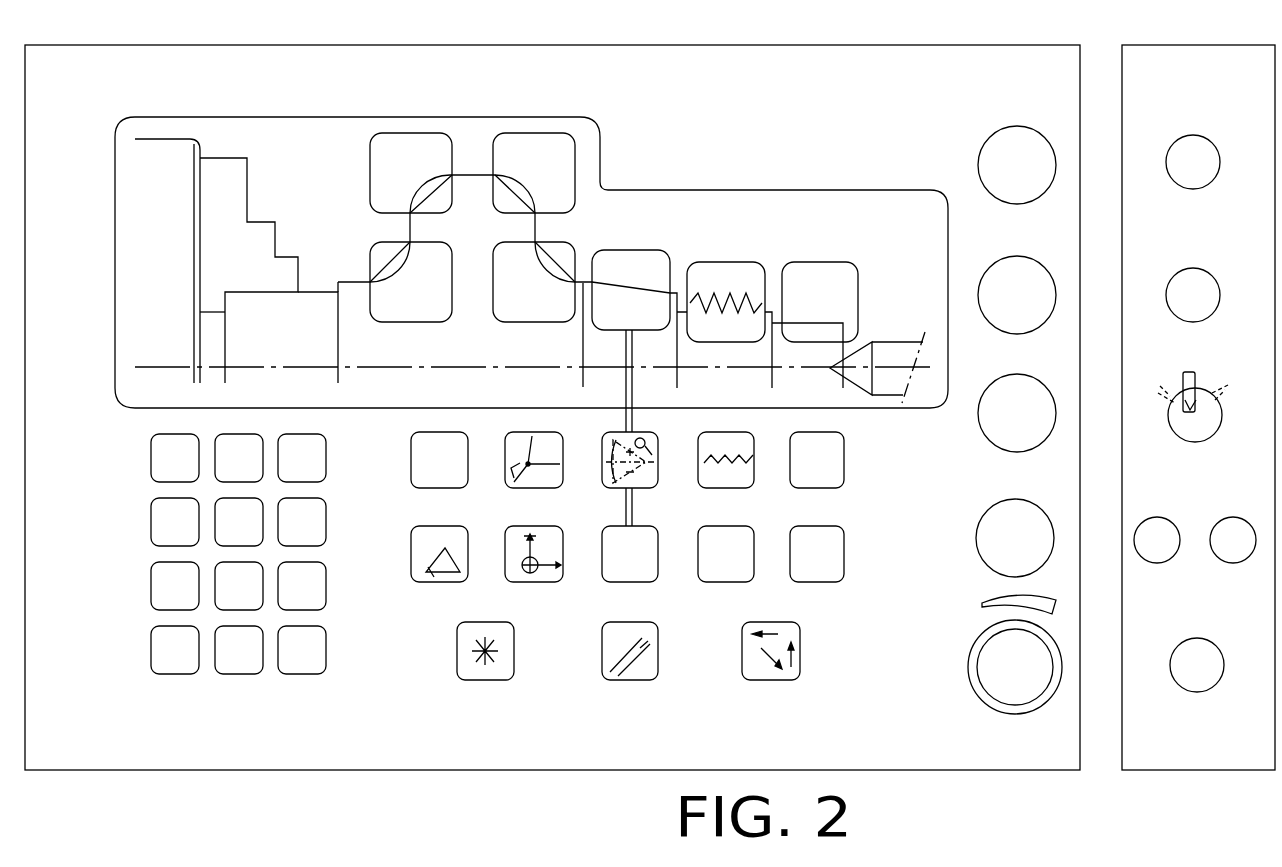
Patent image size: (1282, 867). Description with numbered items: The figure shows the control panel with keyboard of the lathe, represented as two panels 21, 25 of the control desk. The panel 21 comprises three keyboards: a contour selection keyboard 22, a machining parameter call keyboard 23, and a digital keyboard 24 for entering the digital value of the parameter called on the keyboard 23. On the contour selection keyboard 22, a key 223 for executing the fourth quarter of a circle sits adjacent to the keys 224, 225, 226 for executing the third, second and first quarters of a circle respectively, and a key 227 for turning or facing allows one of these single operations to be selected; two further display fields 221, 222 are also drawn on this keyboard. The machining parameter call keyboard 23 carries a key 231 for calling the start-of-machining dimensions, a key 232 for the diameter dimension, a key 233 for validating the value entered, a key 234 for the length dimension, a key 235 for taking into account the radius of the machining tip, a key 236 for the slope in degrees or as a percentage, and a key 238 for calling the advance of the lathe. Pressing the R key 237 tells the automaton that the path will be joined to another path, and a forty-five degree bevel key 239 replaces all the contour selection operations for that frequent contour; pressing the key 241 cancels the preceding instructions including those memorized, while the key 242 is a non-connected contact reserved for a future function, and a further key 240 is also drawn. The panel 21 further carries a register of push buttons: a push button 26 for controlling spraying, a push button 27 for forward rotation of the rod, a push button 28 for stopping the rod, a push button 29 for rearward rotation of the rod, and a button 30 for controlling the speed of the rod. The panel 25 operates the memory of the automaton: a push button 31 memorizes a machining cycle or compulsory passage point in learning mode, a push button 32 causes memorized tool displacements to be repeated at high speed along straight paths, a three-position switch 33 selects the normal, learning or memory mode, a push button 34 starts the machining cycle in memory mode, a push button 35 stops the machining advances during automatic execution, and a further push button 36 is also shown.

The panel 21 is at (688, 45).
The contour selection keyboard 22 is at (287, 117).
The machining parameter call keyboard 23 is at (606, 621).
The digital keyboard 24 is at (188, 730).
The panel 25 is at (1196, 45).
The push button for controlling spraying 26 is at (1004, 177).
The push button for controlling forward rotation of the rod 27 is at (1004, 307).
The push button for controlling stopping of the rod 28 is at (1004, 425).
The push button for controlling rearward rotation of the rod 29 is at (1002, 550).
The button for controlling the speed of the rod 30 is at (1002, 679).
The push button 31 is at (1182, 174).
The push button 32 is at (1182, 307).
The three-position switch 33 is at (1190, 443).
The push button 34 is at (1142, 558).
The push button 35 is at (1219, 558).
The push button 36 is at (1186, 677).
The display field 221 is at (630, 250).
The display field with thread symbol 222 is at (722, 262).
The key for executing the fourth quarter of a circle 223 is at (562, 243).
The key for executing the third quarter of a circle 224 is at (530, 133).
The key for executing the second quarter of a circle 225 is at (393, 133).
The key for executing the first quarter of a circle 226 is at (433, 322).
The key for turning or facing 227 is at (835, 262).
The key for calling the dimensions for the start of machining 231 is at (533, 582).
The key for calling the dimension in terms of diameter 232 is at (838, 488).
The key for validating the digital value 233 is at (490, 680).
The key for calling the dimension in terms of length 234 is at (828, 582).
The key for calling for taking into account the radius of the machining tip 235 is at (535, 488).
The key for calling the dimension of the slope in degrees 236 is at (645, 488).
The R key 237 is at (432, 488).
The key for calling the advance by the lathe 238 is at (736, 488).
The 45° bevel key 239 is at (455, 582).
The direction key 240 is at (786, 680).
The key 241 is at (658, 660).
The key 242 is at (772, 584).